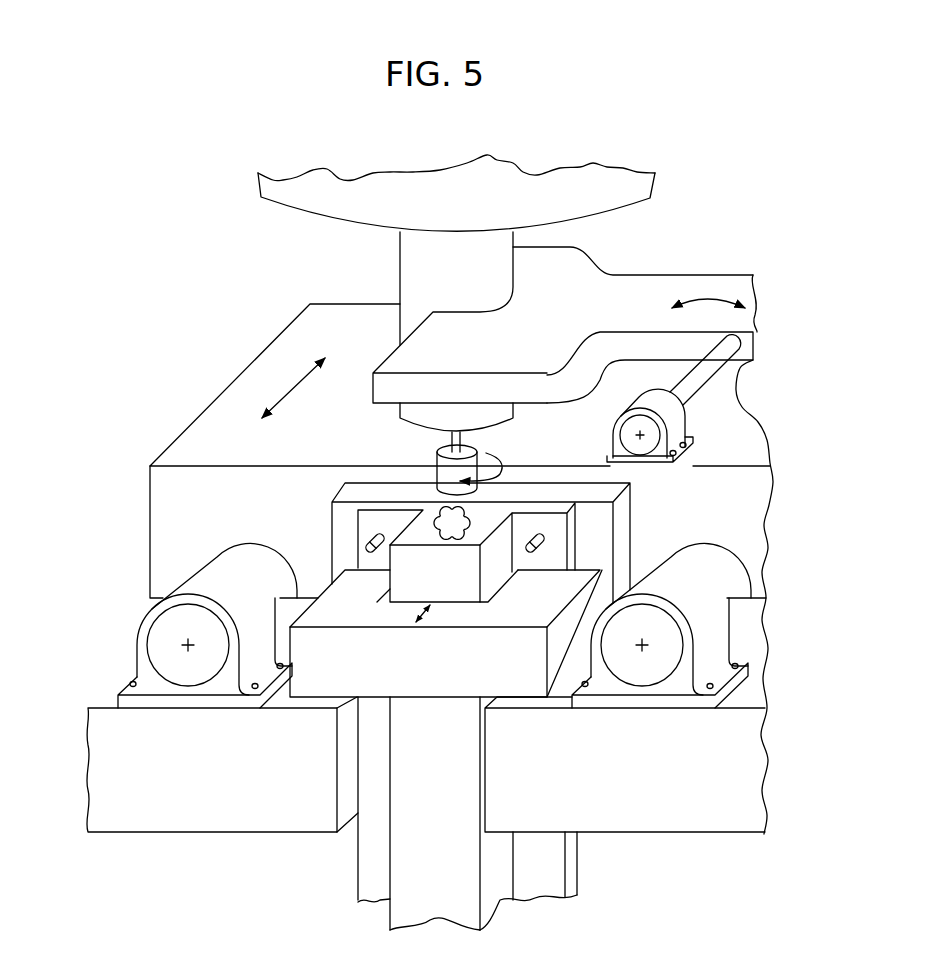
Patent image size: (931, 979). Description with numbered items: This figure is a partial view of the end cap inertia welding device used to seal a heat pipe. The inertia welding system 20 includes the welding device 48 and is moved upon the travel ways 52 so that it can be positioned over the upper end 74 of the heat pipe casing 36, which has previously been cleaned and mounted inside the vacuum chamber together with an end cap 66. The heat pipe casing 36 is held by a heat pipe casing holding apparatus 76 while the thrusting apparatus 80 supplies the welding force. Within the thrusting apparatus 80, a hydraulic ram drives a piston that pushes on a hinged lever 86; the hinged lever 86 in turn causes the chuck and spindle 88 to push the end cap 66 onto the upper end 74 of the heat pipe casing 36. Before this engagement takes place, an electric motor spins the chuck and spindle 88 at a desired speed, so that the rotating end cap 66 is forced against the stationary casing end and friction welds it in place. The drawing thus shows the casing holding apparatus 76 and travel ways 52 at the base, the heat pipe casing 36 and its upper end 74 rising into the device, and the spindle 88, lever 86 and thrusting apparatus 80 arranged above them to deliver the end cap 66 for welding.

The inertia welding system 20 is at (639, 139).
The heat pipe casing 36 is at (505, 910).
The welding device 48 is at (221, 294).
The travel ways 52 is at (115, 614).
The end cap 66 is at (437, 462).
The upper end 74 is at (498, 509).
The heat pipe casing holding apparatus 76 is at (327, 598).
The thrusting apparatus 80 is at (736, 248).
The hinged lever 86 is at (605, 268).
The chuck and spindle 88 is at (400, 275).